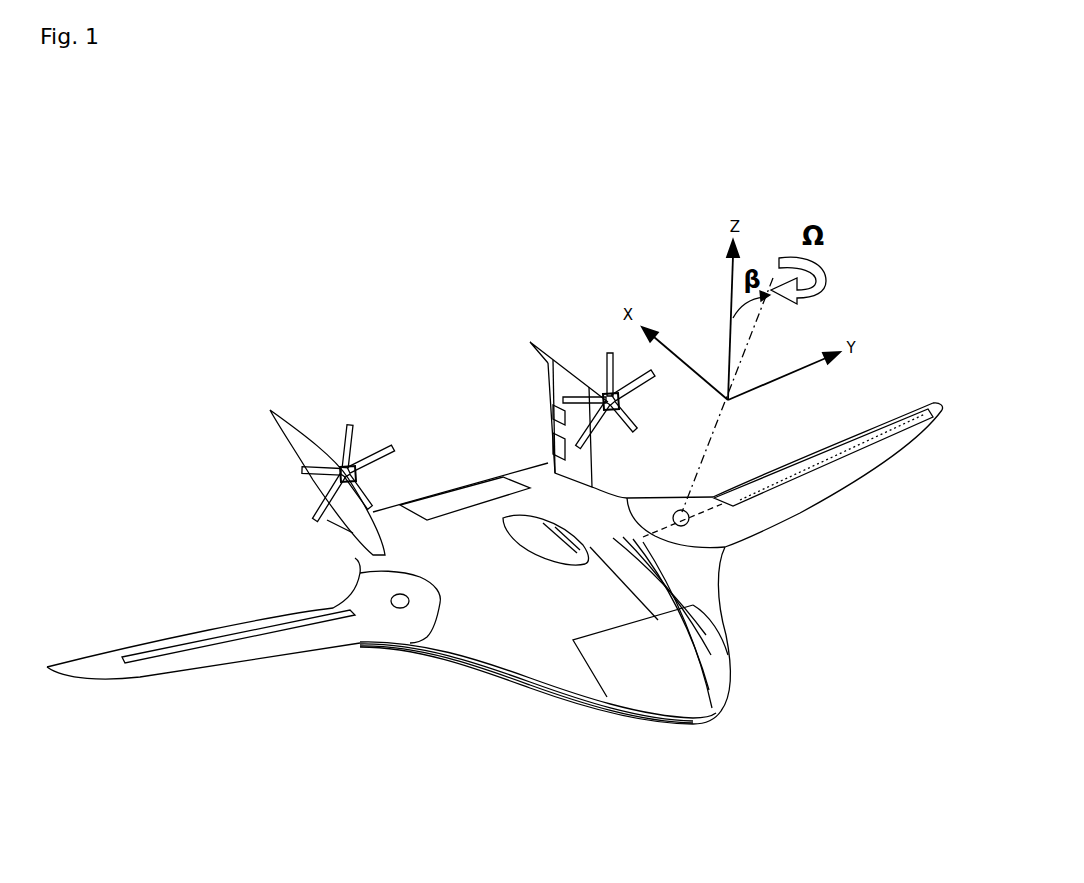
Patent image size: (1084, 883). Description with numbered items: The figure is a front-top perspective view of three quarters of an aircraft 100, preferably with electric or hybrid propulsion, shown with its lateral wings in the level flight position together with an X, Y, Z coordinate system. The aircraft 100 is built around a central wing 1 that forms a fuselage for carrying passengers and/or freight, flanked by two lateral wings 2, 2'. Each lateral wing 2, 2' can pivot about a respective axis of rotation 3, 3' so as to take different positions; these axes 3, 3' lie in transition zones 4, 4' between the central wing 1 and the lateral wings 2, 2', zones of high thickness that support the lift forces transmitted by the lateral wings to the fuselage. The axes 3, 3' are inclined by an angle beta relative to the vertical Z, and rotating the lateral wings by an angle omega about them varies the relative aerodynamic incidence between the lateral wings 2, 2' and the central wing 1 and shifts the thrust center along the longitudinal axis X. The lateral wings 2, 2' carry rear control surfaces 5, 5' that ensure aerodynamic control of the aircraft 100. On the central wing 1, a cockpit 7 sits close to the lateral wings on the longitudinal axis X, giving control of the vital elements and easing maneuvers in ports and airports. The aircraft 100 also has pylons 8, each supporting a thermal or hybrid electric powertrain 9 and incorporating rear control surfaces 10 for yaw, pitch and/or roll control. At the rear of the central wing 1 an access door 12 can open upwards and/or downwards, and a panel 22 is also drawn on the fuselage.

The aircraft 100 is at (425, 290).
The central wing 1 is at (520, 635).
The lateral wing 2 is at (828, 499).
The lateral wing 2' is at (203, 685).
The axis of rotation 3 is at (717, 581).
The axis of rotation 3' is at (330, 573).
The transition zone 4 is at (668, 468).
The transition zone 4' is at (378, 677).
The rear control surface 5 is at (823, 453).
The rear control surface 5' is at (237, 595).
The cockpit 7 is at (537, 537).
The pylon 8 is at (318, 552).
The powertrain 9 is at (322, 452).
The rear control surface 10 is at (540, 420).
The access door 12 is at (423, 508).
The access panel 22 is at (677, 687).